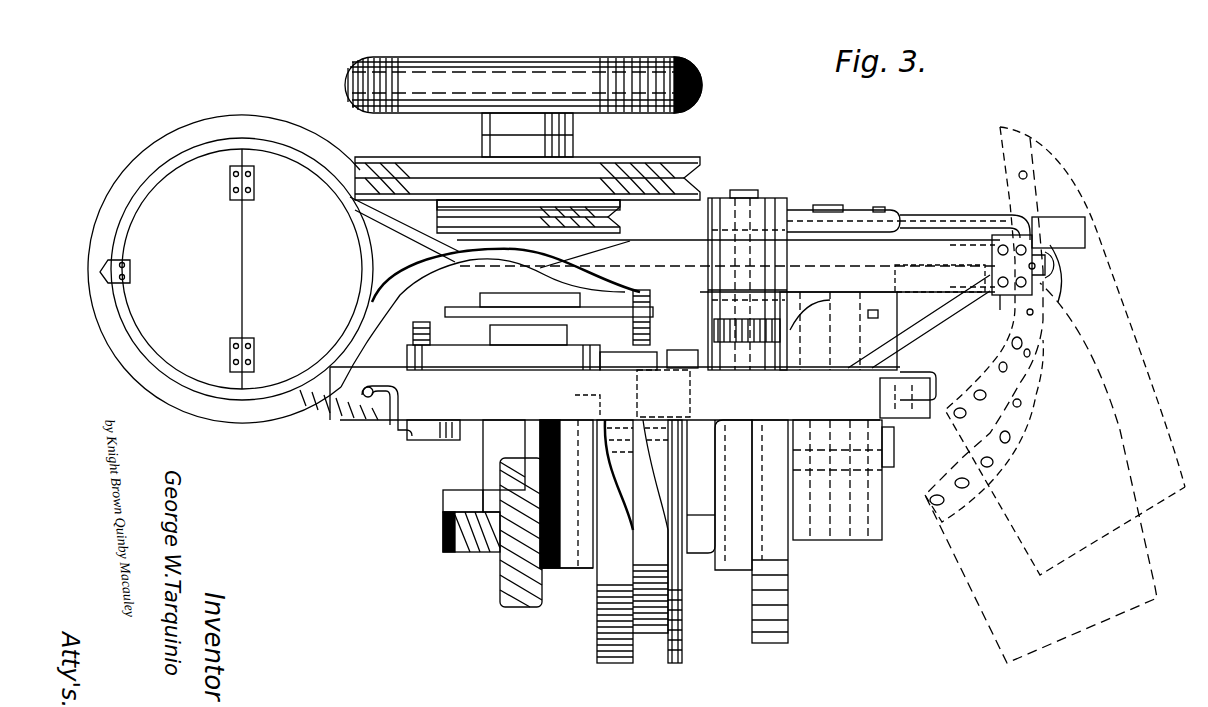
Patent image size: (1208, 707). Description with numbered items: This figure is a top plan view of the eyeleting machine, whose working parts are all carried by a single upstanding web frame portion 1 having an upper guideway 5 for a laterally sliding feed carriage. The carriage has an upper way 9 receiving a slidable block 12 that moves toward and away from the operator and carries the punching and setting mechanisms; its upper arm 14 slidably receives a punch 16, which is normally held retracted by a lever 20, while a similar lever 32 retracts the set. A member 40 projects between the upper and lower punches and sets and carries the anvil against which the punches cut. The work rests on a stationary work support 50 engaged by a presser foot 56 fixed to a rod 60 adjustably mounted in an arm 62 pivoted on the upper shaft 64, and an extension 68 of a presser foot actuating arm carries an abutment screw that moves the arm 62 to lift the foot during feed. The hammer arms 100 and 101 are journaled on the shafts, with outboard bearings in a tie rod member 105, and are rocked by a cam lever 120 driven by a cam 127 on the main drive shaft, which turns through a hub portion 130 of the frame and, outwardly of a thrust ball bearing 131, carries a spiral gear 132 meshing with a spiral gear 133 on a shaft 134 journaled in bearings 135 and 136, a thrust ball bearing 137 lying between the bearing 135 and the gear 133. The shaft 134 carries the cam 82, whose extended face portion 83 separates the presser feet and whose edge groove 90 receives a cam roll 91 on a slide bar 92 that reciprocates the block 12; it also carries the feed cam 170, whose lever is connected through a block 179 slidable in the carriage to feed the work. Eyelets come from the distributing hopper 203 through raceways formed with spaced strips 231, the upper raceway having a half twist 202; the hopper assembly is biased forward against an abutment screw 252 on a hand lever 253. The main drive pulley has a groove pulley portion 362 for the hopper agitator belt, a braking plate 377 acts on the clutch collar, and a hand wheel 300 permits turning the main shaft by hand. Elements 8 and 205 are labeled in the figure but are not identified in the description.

The upstanding web frame portion 1 is at (515, 397).
The upper guideway 5 is at (840, 540).
The bolt 8 is at (868, 315).
The upper way 9 is at (920, 380).
The slidable block 12 is at (905, 418).
The upper arm 14 is at (950, 308).
The punch 16 is at (1040, 290).
The lever 20 is at (977, 306).
The lever 32 is at (937, 305).
The member 40 is at (1068, 300).
The stationary work support 50 is at (1082, 220).
The presser foot 56 is at (1040, 235).
The rod 60 is at (922, 214).
The arm 62 is at (798, 215).
The upper shaft 64 is at (768, 182).
The extension 68 is at (835, 206).
The cam 82 is at (598, 632).
The extended face portion 83 is at (692, 483).
The edge groove 90 is at (651, 640).
The cam roll 91 is at (600, 405).
The slide bar 92 is at (667, 383).
The upper hammer arm 100 is at (848, 292).
The lower hammer arm 101 is at (838, 331).
The tie rod member 105 is at (728, 198).
The cam lever 120 is at (674, 330).
The cam 127 is at (480, 352).
The hub portion 130 is at (487, 478).
The thrust ball bearing 131 is at (478, 552).
The spiral gear 132 is at (443, 528).
The spiral gear 133 is at (500, 594).
The shaft 134 is at (700, 555).
The bearing 135 is at (582, 562).
The bearing 136 is at (745, 572).
The thrust ball bearing 137 is at (541, 575).
The cam 170 is at (775, 646).
The block 179 is at (895, 447).
The half twist 202 is at (418, 212).
The distributing hopper 203 is at (652, 144).
The drum 205 is at (193, 126).
The strips 231 is at (420, 262).
The abutment screw 252 is at (368, 402).
The hand lever 253 is at (435, 442).
The hand wheel 300 is at (512, 58).
The groove pulley portion 362 is at (620, 217).
The braking plate 377 is at (620, 307).